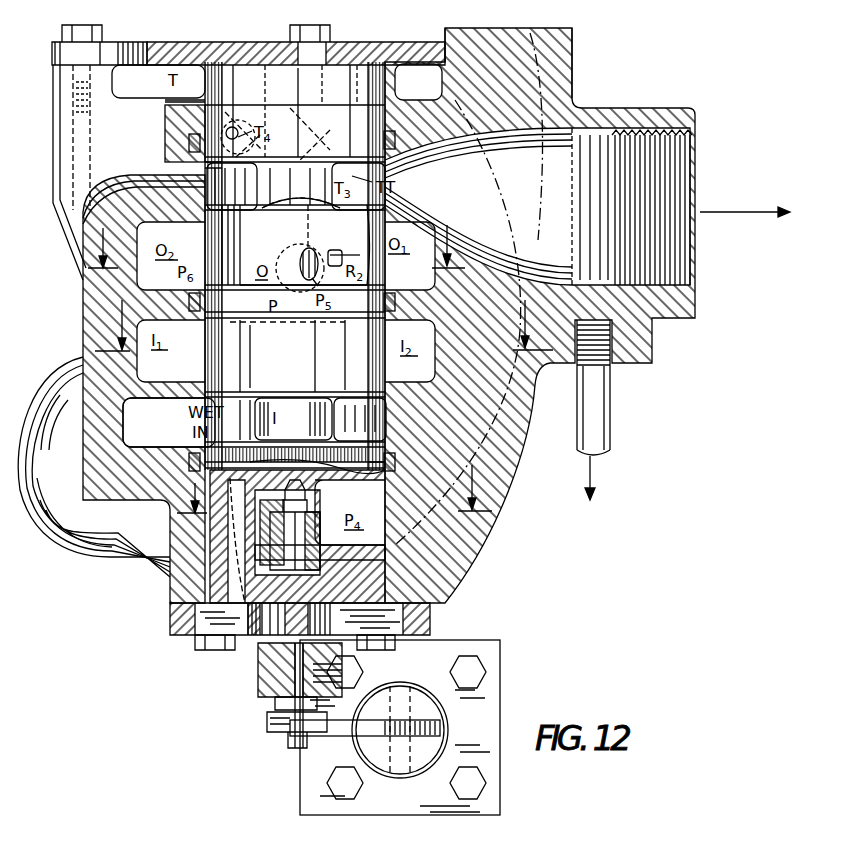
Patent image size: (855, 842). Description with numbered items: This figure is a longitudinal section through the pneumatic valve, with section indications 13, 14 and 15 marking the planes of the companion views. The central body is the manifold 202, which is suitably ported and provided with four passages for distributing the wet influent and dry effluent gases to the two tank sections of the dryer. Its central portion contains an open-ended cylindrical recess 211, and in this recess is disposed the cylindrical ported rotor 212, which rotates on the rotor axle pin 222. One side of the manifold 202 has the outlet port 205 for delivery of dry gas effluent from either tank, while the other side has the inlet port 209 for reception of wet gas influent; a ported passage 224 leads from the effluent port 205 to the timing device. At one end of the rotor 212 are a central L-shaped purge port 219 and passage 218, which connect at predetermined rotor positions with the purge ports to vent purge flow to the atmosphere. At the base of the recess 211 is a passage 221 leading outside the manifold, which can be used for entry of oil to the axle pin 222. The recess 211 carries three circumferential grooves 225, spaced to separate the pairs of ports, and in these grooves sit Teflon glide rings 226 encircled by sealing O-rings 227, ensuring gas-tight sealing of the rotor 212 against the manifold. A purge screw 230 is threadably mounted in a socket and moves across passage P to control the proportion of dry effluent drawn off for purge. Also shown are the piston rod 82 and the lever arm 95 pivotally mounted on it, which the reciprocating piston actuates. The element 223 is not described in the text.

The manifold 202 is at (504, 468).
The outlet port 205 is at (590, 212).
The inlet port 209 is at (164, 437).
The cylindrical recess 211 is at (364, 417).
The ported rotor 212 is at (238, 360).
The purge passage 218 is at (250, 540).
The purge port 219 is at (215, 628).
The passage 221 is at (292, 666).
The rotor axle pin 222 is at (290, 496).
The needle sleeve 223 is at (318, 520).
The ported passage 224 is at (600, 428).
The circumferential grooves 225 is at (396, 146).
The glide rings 226 is at (205, 167).
The sealing O-rings 227 is at (189, 142).
The purge screw 230 is at (366, 228).
The lever arm 95 is at (396, 720).
The piston rod 82 is at (430, 768).
The section line 13 is at (329, 489).
The section line 14 is at (323, 327).
The section line 15 is at (280, 247).